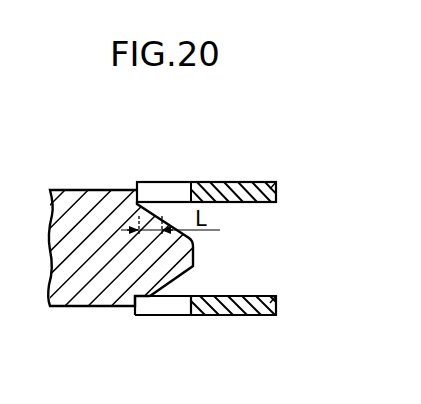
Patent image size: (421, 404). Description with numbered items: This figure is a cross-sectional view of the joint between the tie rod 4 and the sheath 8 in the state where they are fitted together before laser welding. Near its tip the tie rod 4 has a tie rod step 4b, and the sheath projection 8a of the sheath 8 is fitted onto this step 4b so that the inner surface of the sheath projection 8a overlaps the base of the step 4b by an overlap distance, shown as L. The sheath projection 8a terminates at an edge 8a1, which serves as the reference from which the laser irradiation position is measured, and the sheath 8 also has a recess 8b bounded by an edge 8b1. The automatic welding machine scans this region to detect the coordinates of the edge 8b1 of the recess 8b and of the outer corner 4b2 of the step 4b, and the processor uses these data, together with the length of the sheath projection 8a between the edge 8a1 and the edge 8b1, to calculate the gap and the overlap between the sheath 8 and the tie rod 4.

The tie rod 4 is at (83, 186).
The tie rod step 4b is at (142, 192).
The outer corner of the step 4b2 is at (183, 202).
The sheath 8 is at (247, 179).
The sheath projection 8a is at (163, 319).
The edge of the sheath projection 8a1 is at (134, 311).
The recess of the sheath 8b is at (255, 319).
The edge of the recess 8b1 is at (191, 309).